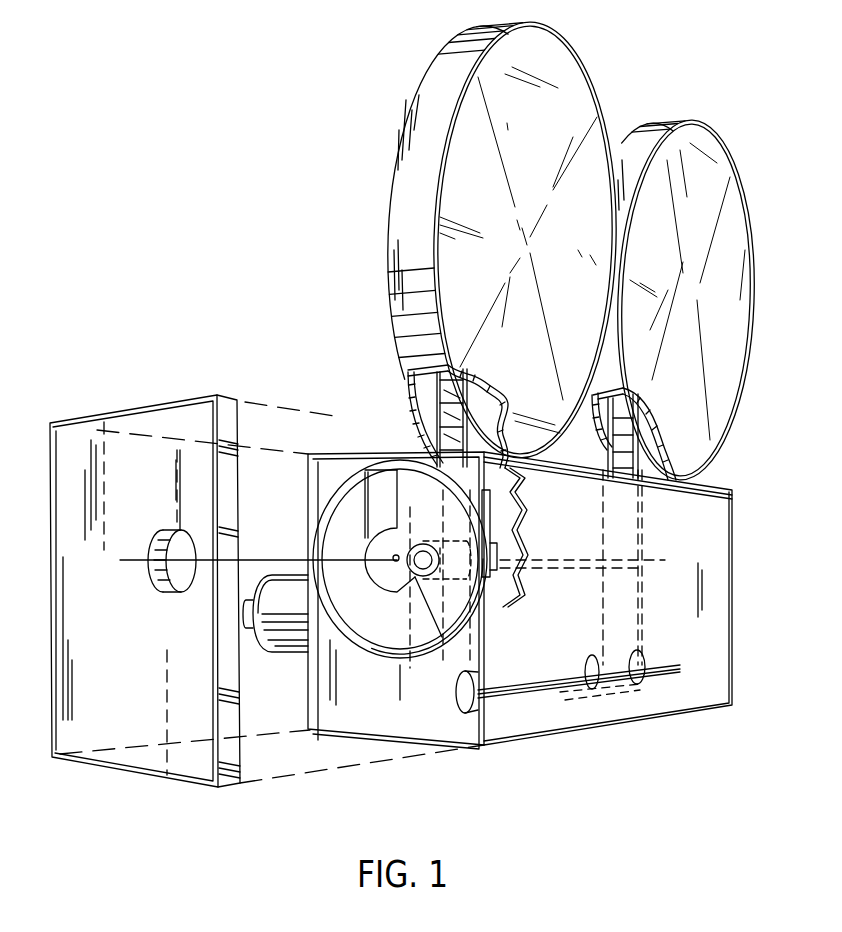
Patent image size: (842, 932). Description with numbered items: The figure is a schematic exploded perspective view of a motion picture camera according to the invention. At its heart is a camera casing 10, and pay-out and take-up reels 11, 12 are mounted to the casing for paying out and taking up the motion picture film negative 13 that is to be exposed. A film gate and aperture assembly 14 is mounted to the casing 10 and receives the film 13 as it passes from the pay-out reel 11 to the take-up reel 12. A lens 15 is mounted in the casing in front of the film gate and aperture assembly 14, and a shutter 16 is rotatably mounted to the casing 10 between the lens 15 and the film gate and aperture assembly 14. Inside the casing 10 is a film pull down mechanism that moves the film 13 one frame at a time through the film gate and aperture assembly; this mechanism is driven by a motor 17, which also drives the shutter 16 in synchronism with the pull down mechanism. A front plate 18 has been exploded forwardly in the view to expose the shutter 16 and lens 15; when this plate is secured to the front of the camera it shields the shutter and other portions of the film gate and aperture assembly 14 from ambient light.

The camera casing 10 is at (735, 507).
The pay-out reel 11 is at (477, 400).
The take-up reel 12 is at (640, 412).
The motion picture film negative 13 is at (452, 450).
The film gate and aperture assembly 14 is at (497, 550).
The lens 15 is at (415, 592).
The shutter 16 is at (368, 497).
The motor 17 is at (278, 598).
The front plate 18 is at (227, 712).